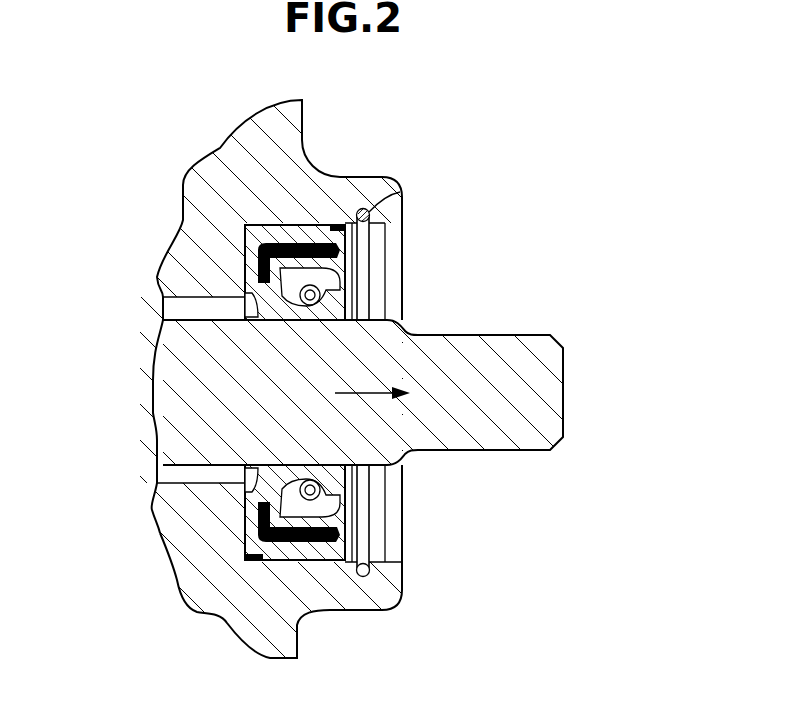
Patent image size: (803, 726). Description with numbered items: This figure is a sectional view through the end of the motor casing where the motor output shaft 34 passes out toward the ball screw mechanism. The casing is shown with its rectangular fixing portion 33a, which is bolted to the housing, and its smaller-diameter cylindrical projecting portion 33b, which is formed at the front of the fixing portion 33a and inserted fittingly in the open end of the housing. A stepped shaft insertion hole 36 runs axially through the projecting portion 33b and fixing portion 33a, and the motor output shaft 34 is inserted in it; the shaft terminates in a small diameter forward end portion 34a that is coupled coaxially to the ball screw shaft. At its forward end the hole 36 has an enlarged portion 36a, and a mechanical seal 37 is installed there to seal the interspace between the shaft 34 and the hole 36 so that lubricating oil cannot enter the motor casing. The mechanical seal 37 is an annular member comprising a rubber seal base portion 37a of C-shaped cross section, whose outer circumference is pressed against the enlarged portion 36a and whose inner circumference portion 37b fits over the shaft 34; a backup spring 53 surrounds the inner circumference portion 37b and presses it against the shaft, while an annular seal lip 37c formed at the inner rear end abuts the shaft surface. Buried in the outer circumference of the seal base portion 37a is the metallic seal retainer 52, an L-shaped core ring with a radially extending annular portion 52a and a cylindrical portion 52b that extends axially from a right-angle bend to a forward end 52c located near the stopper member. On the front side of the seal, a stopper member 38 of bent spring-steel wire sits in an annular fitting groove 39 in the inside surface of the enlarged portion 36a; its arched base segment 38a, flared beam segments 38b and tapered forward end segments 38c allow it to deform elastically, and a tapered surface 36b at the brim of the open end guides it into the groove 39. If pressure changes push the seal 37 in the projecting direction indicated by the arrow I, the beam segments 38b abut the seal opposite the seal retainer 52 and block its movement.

The fixing portion 33a is at (401, 363).
The projecting portion 33b is at (401, 363).
The motor output shaft 34 is at (401, 363).
The small diameter forward end portion 34a is at (540, 430).
The stepped shaft insertion hole 36 is at (401, 363).
The enlarged portion 36a is at (401, 363).
The tapered surface 36b is at (401, 363).
The mechanical seal 37 is at (401, 363).
The seal base portion 37a is at (401, 363).
The inner circumference portion 37b is at (340, 306).
The annular seal lip 37c is at (185, 347).
The stopper member 38 is at (430, 247).
The base segment 38a is at (430, 247).
The beam segments 38b is at (451, 521).
The forward end segments 38c is at (451, 521).
The annular fitting groove 39 is at (451, 566).
The seal retainer 52 is at (401, 363).
The annular portion 52a is at (401, 363).
The cylindrical portion 52b is at (312, 542).
The forward end 52c is at (385, 532).
The backup spring 53 is at (342, 272).
The insertion direction arrow I is at (578, 395).